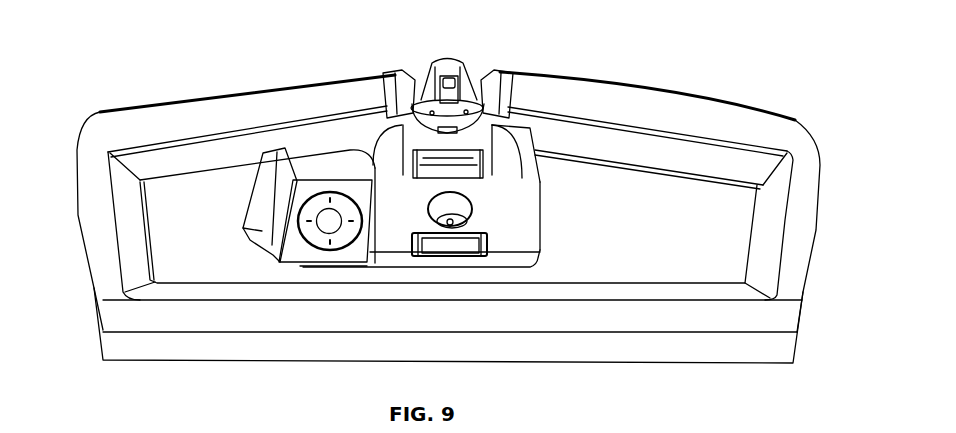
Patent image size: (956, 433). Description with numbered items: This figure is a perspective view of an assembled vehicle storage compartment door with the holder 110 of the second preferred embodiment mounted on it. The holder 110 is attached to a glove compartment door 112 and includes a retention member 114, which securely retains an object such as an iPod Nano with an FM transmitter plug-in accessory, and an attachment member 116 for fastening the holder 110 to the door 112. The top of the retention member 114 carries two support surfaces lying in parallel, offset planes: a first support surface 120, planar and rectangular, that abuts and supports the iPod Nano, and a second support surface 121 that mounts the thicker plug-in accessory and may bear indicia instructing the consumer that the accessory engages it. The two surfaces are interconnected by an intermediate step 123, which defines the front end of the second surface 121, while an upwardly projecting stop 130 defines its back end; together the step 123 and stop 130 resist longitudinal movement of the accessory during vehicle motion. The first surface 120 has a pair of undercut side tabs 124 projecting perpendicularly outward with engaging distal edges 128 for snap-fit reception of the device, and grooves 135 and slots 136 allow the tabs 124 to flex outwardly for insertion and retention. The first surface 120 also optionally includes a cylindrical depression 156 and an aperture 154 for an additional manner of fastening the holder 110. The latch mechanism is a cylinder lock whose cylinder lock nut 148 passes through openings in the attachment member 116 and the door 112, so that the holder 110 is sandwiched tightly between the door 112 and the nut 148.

The holder 110 is at (552, 245).
The glove compartment door 112 is at (648, 177).
The retention member 114 is at (521, 265).
The attachment member 116 is at (305, 262).
The first support surface 120 is at (522, 176).
The second support surface 121 is at (310, 187).
The intermediate step 123 is at (383, 252).
The side tabs 124 is at (508, 160).
The engaging distal edges 128 is at (387, 100).
The stop 130 is at (273, 230).
The grooves 135 is at (492, 242).
The slots 136 is at (437, 255).
The cylinder lock nut 148 is at (484, 88).
The aperture 154 is at (470, 210).
The cylindrical depression 156 is at (440, 200).